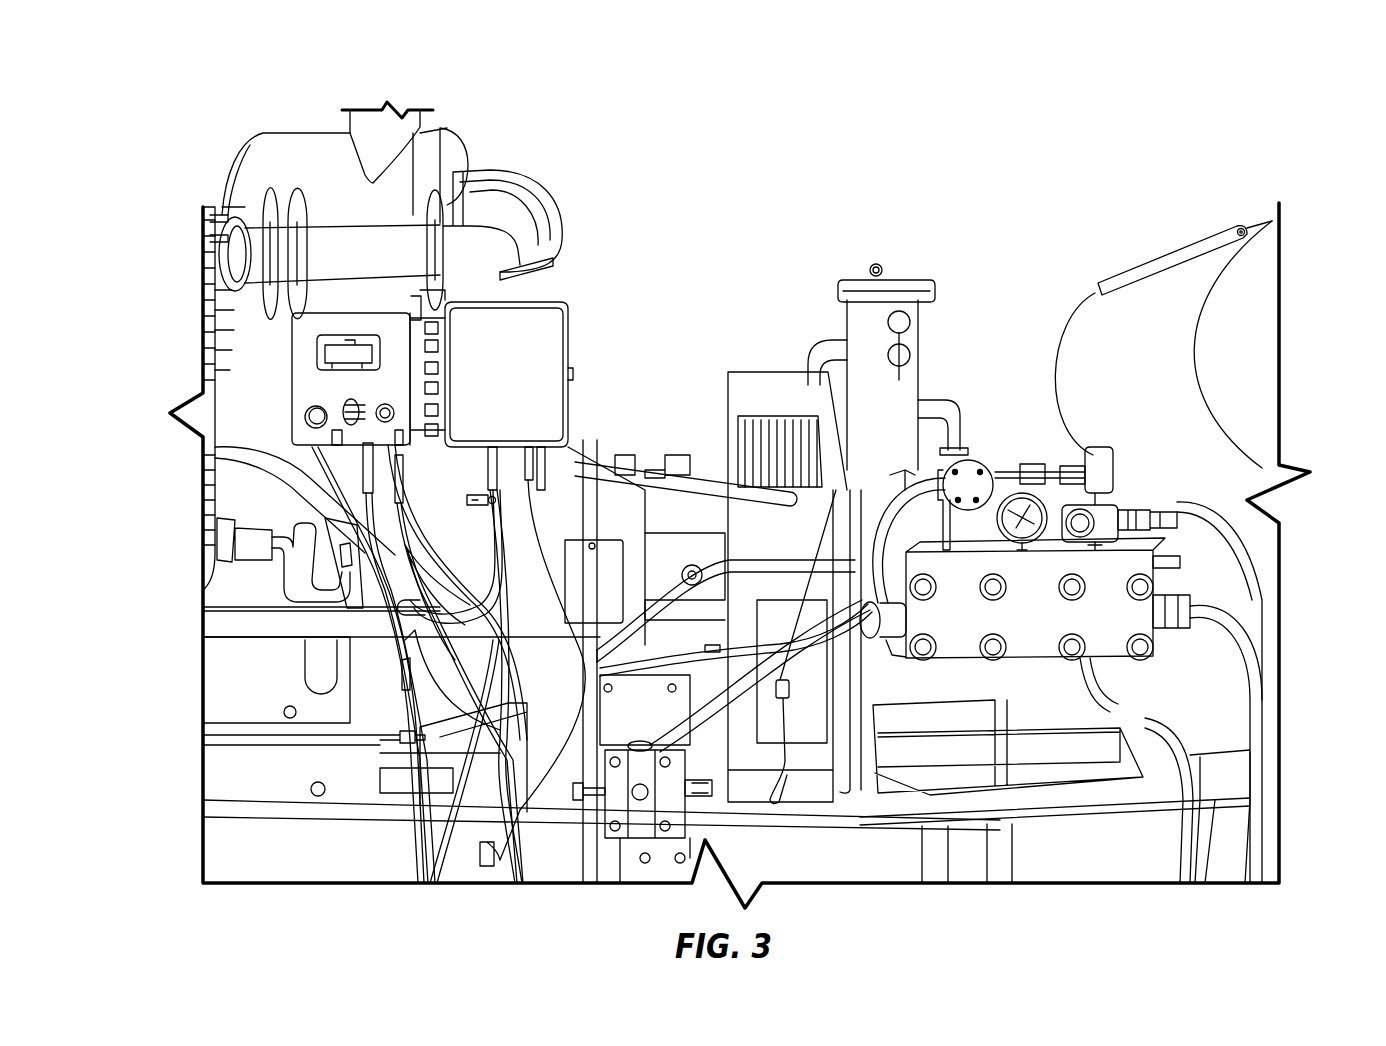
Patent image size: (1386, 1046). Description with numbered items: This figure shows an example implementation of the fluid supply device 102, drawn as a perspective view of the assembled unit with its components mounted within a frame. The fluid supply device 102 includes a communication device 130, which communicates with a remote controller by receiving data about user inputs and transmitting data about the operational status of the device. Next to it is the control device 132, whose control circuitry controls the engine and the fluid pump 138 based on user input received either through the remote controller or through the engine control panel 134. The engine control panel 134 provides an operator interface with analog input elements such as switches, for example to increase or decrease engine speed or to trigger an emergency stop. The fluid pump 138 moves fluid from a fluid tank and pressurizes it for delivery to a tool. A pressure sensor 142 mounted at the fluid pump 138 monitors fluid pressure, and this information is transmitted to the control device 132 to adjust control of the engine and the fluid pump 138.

The fluid supply device 102 is at (740, 555).
The communication device 130 is at (553, 300).
The control device 132 is at (390, 210).
The engine control panel 134 is at (317, 352).
The fluid pump 138 is at (1008, 630).
The pressure sensor 142 is at (1047, 470).